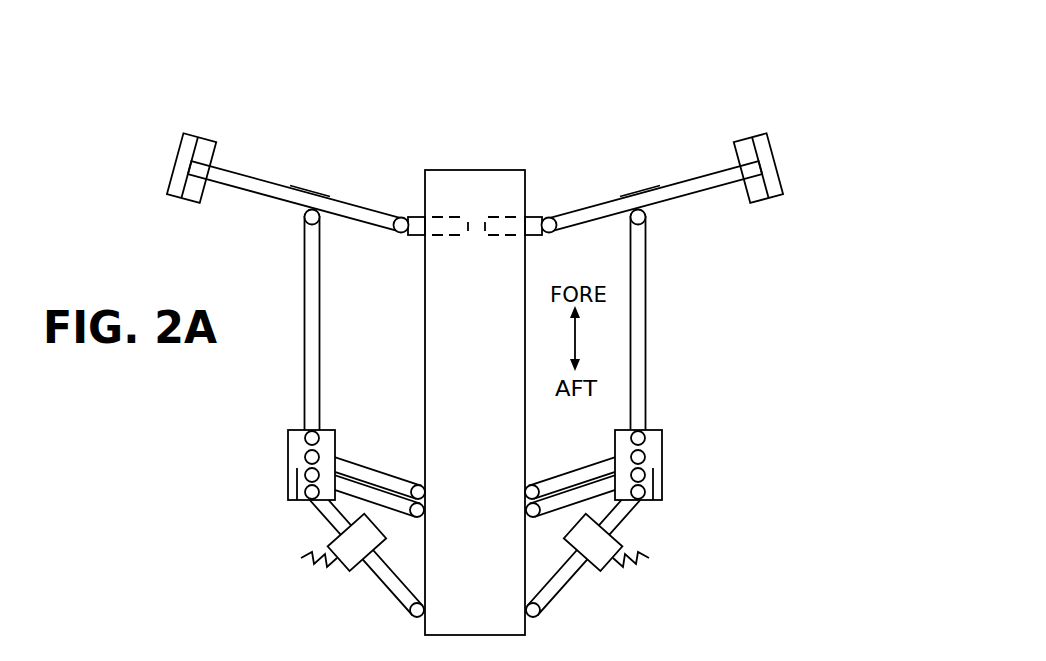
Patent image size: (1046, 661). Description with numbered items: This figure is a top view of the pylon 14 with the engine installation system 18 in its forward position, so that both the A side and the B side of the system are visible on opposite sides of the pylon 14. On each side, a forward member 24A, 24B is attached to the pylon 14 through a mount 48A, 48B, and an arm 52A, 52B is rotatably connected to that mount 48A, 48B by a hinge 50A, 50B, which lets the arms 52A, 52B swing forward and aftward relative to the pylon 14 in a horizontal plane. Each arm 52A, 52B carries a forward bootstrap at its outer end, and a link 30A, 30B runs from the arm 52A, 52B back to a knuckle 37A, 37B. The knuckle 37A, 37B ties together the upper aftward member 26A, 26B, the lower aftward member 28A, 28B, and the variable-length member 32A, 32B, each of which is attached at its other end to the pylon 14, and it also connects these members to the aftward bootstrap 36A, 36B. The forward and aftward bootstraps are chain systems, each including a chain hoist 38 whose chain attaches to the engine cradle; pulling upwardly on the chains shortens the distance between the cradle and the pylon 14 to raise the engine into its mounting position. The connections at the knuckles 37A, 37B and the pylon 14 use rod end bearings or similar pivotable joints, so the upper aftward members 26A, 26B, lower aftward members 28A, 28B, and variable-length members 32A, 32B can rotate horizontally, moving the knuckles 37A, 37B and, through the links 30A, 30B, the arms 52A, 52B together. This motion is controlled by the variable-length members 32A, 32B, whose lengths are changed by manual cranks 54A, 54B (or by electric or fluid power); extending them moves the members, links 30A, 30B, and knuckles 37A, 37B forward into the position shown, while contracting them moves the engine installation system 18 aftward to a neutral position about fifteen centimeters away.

The engine installation system 18 is at (704, 55).
The pylon 14 is at (477, 170).
The forward member 24A is at (246, 160).
The forward member 24B is at (704, 160).
The chain hoist 38 is at (200, 133).
The arm 52A is at (300, 188).
The arm 52B is at (650, 188).
The mount 48A is at (416, 215).
The mount 48B is at (534, 215).
The hinge 50A is at (401, 233).
The hinge 50B is at (549, 233).
The link 30A is at (302, 322).
The link 30B is at (648, 322).
The aftward bootstrap 36A is at (273, 457).
The aftward bootstrap 36B is at (678, 457).
The knuckle 37A is at (297, 470).
The knuckle 37B is at (653, 470).
The upper aftward member 26A is at (363, 458).
The upper aftward member 26B is at (587, 458).
The lower aftward member 28A is at (385, 513).
The lower aftward member 28B is at (565, 513).
The variable-length member 32A is at (368, 592).
The variable-length member 32B is at (582, 592).
The manual crank 54A is at (301, 558).
The manual crank 54B is at (649, 558).